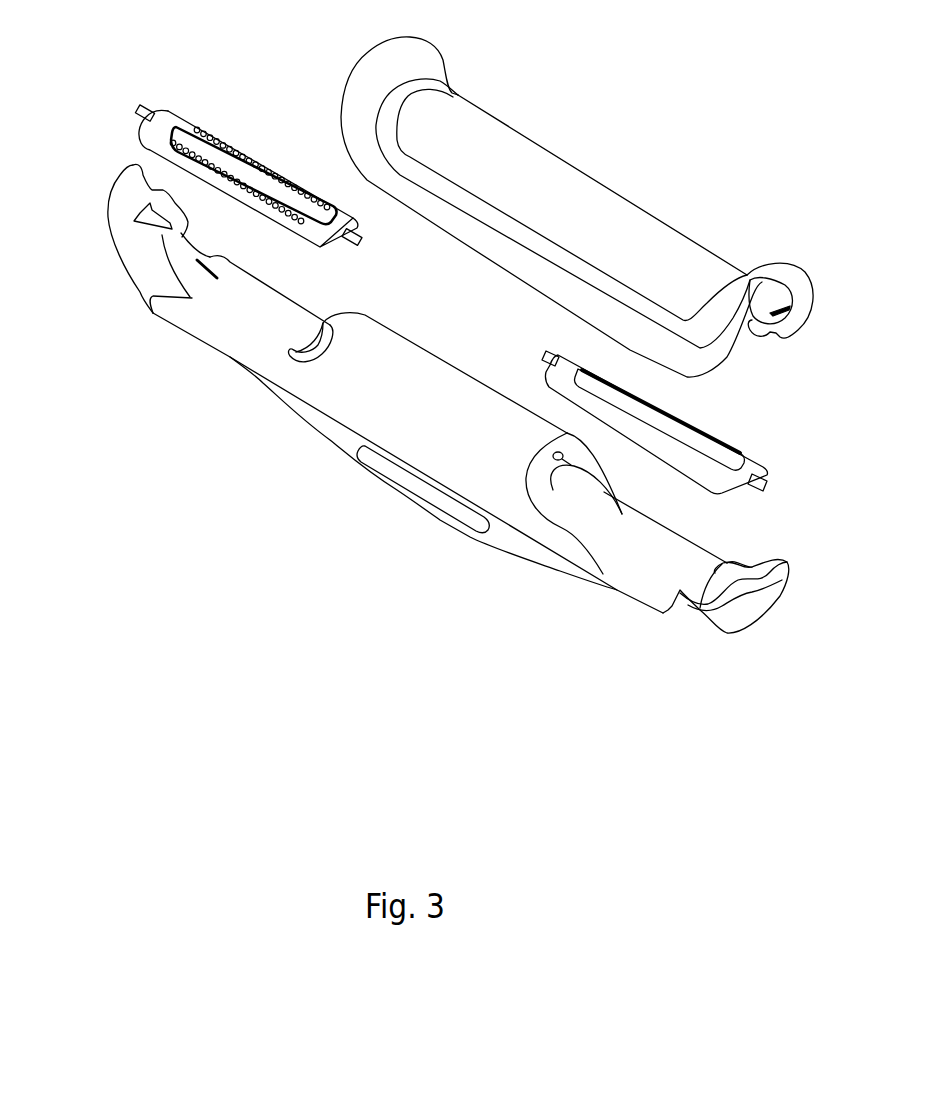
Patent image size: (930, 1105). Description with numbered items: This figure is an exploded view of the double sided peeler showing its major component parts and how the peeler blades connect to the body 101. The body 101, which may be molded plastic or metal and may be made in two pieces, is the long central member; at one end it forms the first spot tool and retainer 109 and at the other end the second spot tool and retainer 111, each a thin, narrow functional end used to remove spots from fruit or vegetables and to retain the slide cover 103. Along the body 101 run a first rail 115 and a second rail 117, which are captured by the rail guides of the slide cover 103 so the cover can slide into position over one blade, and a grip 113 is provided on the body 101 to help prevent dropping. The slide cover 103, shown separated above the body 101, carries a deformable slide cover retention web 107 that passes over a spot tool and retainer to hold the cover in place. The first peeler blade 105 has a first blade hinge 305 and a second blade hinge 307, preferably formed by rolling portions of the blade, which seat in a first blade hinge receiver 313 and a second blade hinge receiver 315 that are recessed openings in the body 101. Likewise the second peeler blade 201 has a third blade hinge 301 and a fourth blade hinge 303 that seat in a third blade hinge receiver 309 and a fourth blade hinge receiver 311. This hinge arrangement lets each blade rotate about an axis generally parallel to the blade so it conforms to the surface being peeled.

The body 101 is at (327, 428).
The slide cover 103 is at (612, 212).
The first peeler blade 105 is at (170, 120).
The slide cover retention web 107 is at (783, 305).
The first spot tool and retainer 109 is at (785, 566).
The second spot tool and retainer 111 is at (123, 165).
The grip 113 is at (423, 497).
The first rail 115 is at (153, 312).
The second rail 117 is at (252, 271).
The second peeler blade 201 is at (742, 463).
The third blade hinge 301 is at (543, 355).
The fourth blade hinge 303 is at (768, 488).
The first blade hinge 305 is at (138, 106).
The second blade hinge 307 is at (363, 241).
The third blade hinge receiver 309 is at (566, 459).
The fourth blade hinge receiver 311 is at (713, 568).
The first blade hinge receiver 313 is at (143, 217).
The second blade hinge receiver 315 is at (323, 333).